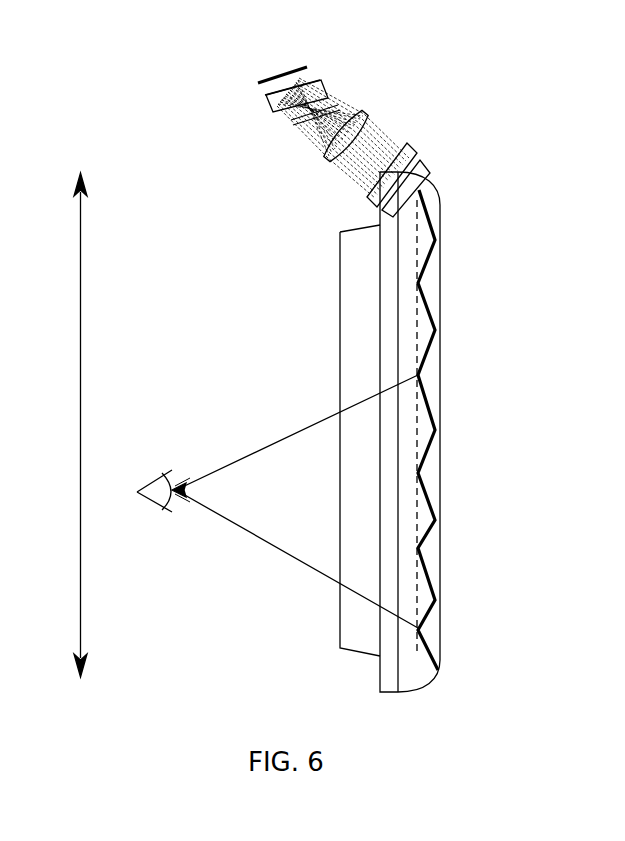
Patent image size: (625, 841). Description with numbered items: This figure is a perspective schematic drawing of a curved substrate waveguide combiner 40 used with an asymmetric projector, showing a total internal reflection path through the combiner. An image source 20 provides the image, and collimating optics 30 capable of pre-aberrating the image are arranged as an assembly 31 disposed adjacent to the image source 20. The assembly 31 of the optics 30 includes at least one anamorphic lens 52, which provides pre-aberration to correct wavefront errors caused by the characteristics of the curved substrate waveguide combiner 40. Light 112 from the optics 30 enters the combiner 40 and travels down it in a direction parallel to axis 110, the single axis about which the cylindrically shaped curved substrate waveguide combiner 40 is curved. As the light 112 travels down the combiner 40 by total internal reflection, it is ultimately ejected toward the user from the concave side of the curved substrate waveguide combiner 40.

The optics 30 is at (285, 62).
The image source 20 is at (298, 65).
The anamorphic lens 52 is at (323, 85).
The assembly 31 is at (286, 135).
The light 112 is at (429, 305).
The curved substrate waveguide combiner 40 is at (442, 467).
The axis 110 is at (67, 425).